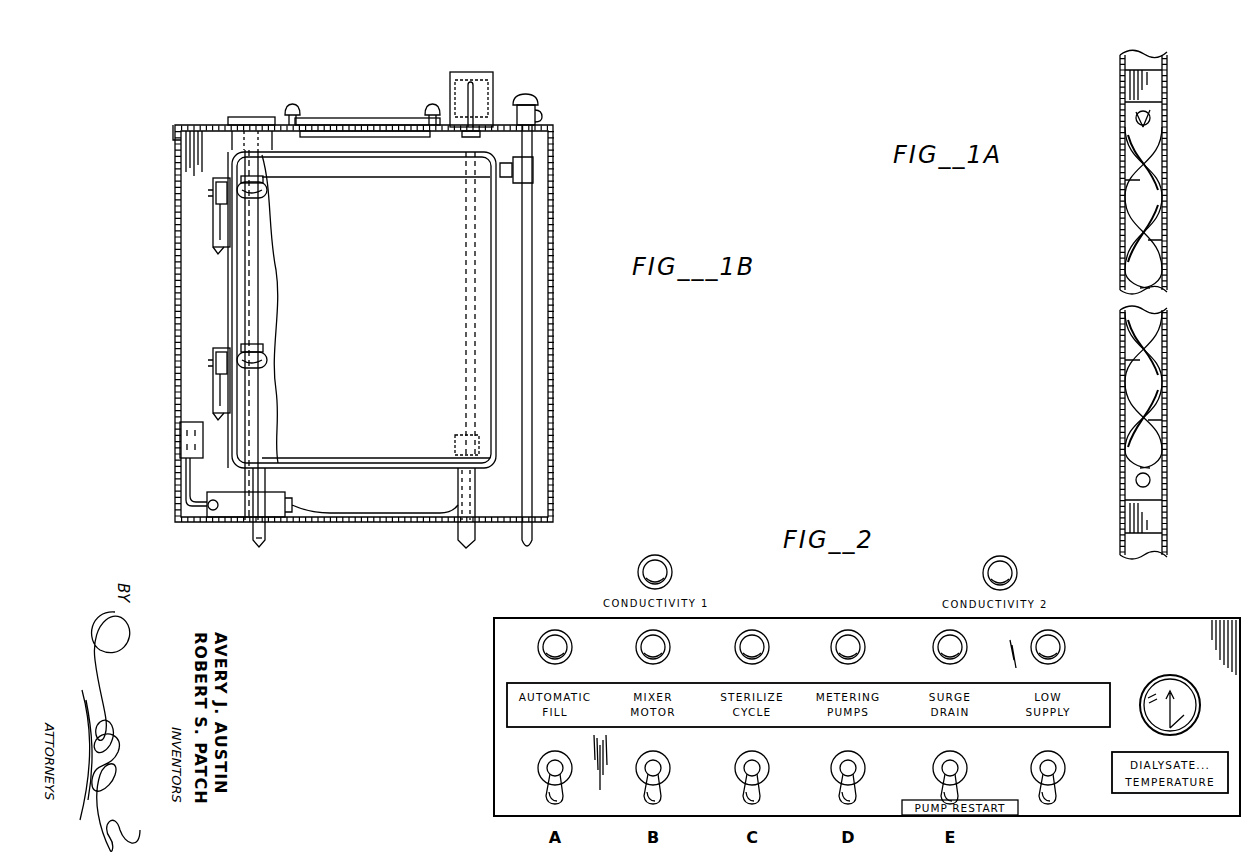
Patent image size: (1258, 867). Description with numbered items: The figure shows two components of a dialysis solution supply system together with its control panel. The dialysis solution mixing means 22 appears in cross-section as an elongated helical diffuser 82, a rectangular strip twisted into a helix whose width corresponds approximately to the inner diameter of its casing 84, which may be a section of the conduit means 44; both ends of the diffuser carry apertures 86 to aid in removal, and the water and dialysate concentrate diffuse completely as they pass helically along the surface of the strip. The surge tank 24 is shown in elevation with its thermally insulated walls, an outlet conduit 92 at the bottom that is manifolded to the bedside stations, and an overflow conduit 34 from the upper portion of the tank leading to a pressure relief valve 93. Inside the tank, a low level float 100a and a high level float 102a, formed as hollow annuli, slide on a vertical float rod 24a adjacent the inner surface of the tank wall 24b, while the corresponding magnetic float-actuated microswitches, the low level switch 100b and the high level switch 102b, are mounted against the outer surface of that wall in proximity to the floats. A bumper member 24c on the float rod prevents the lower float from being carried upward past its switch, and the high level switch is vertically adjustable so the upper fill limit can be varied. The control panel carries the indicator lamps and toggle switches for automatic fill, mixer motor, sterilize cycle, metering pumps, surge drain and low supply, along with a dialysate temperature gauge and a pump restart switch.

In FIG. 1A, the dialysis solution mixing means 22 is at (1110, 323).
In FIG. 1B, the surge tank 24 is at (363, 297).
In FIG. 1B, the vertical float rod 24a is at (258, 289).
In FIG. 1B, the surge tank wall 24b is at (230, 291).
In FIG. 1B, the bumper member 24c is at (263, 345).
In FIG. 1B, the overflow conduit 34 is at (533, 535).
In FIG. 1B, the conduit means 44 is at (266, 537).
In FIG. 1A, the conduit means 44 is at (1135, 62).
In FIG. 1A, the helical diffuser 82 is at (1140, 241).
In FIG. 1A, the casing 84 is at (1121, 203).
In FIG. 1A, the apertures 86 is at (1136, 118).
In FIG. 1B, the outlet conduit 92 is at (457, 537).
In FIG. 1B, the pressure relief valve 93 is at (538, 107).
In FIG. 1B, the low level float 100a is at (267, 360).
In FIG. 1B, the low level switch 100b is at (223, 400).
In FIG. 1B, the high level float 102a is at (267, 190).
In FIG. 1B, the high level switch 102b is at (223, 232).